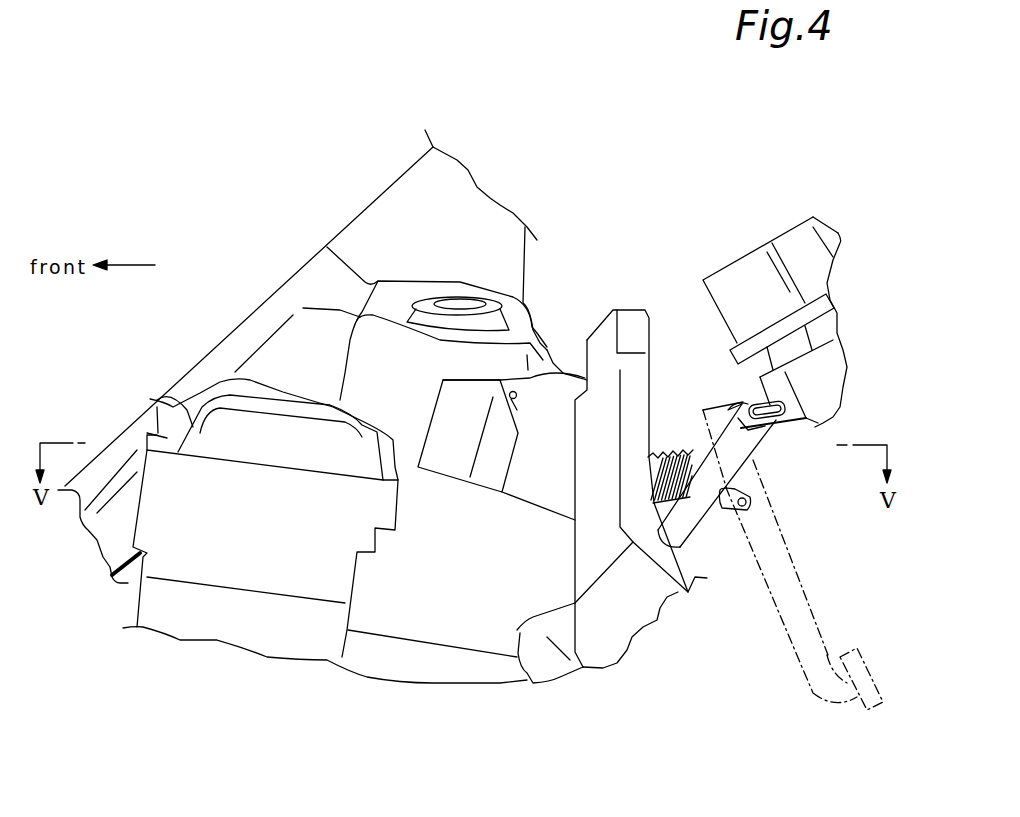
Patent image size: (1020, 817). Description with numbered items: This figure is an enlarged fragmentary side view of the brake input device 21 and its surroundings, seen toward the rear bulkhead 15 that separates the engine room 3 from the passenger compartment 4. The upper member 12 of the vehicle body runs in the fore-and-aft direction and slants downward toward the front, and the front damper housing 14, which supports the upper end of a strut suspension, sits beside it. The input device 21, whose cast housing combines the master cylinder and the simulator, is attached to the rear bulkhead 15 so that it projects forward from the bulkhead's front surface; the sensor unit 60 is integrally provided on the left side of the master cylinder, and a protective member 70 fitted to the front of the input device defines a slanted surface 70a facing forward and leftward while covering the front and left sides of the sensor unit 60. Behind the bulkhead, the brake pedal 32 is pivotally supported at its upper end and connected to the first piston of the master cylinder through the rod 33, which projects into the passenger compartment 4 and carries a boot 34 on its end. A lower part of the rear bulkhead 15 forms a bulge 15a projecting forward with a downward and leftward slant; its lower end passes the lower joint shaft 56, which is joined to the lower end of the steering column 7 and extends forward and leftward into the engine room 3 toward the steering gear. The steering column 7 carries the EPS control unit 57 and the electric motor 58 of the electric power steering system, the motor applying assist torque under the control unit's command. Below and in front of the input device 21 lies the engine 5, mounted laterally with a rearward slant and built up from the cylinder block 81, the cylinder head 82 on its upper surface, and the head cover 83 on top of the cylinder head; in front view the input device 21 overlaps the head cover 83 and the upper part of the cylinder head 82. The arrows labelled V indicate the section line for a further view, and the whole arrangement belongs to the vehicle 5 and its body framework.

The engine room 3 is at (461, 609).
The passenger compartment 4 is at (694, 369).
The engine 5 is at (125, 596).
The steering column 7 is at (830, 370).
The upper member 12 is at (247, 330).
The front damper housing 14 is at (383, 320).
The rear bulkhead 15 is at (627, 320).
The bulge 15a is at (528, 667).
The input device 21 is at (567, 336).
The brake pedal 32 is at (768, 548).
The rod 33 is at (737, 492).
The boot 34 is at (681, 453).
The lower joint shaft 56 is at (703, 520).
The EPS control unit 57 is at (797, 233).
The electric motor 58 is at (737, 270).
The sensor unit 60 is at (540, 500).
The protective member 70 is at (448, 470).
The slanted surface 70a is at (447, 410).
The cylinder block 81 is at (180, 633).
The cylinder head 82 is at (152, 524).
The head cover 83 is at (185, 425).